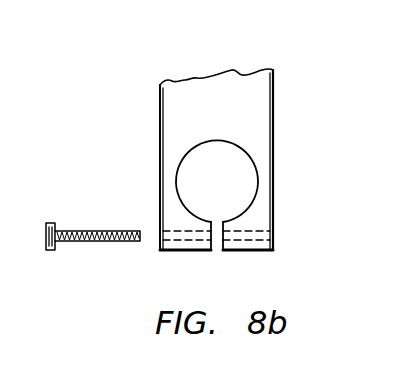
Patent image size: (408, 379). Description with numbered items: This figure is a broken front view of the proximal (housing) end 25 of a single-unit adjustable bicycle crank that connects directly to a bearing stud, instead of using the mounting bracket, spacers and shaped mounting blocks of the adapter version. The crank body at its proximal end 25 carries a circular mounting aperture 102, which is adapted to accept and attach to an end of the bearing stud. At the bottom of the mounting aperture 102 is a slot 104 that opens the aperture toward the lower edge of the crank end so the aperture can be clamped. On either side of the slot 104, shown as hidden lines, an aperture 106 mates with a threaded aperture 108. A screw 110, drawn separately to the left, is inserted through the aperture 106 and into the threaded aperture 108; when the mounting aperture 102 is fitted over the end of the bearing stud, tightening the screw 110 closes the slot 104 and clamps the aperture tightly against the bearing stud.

The proximal (housing) end 25 is at (160, 152).
The mounting aperture 102 is at (255, 170).
The slot 104 is at (222, 250).
The aperture 106 is at (163, 240).
The threaded aperture 108 is at (274, 240).
The screw 110 is at (50, 223).